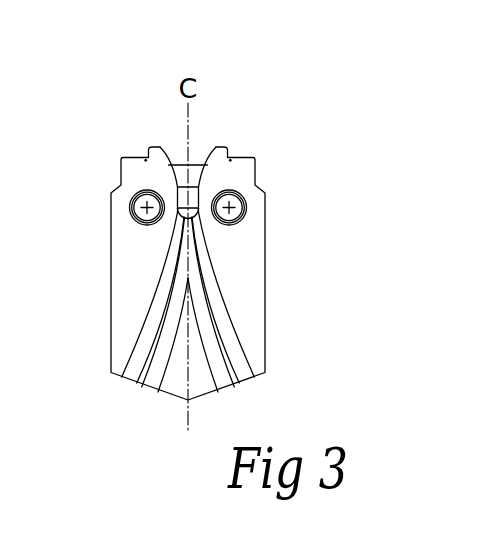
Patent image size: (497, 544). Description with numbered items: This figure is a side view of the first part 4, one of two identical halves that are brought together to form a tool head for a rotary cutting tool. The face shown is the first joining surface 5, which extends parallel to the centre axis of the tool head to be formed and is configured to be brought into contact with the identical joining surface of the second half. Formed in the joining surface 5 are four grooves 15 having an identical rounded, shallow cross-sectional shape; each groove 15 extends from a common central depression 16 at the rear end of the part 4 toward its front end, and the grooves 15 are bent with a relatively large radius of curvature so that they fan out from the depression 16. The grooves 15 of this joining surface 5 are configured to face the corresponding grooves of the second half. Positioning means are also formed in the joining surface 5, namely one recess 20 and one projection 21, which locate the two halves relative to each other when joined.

The first part 4 is at (275, 295).
The first joining surface 5 is at (229, 279).
The grooves 15 is at (155, 382).
The common central depression 16 is at (200, 157).
The recess 20 is at (137, 218).
The projection 21 is at (236, 203).